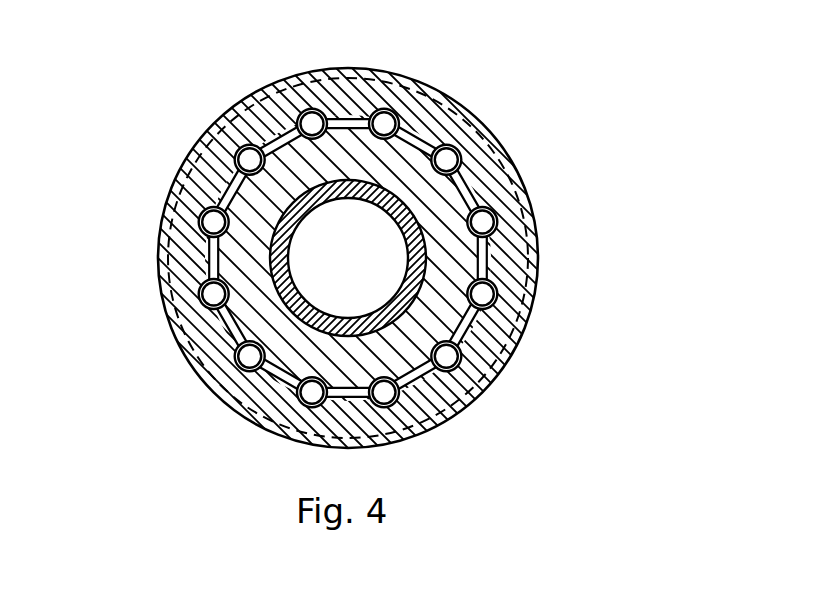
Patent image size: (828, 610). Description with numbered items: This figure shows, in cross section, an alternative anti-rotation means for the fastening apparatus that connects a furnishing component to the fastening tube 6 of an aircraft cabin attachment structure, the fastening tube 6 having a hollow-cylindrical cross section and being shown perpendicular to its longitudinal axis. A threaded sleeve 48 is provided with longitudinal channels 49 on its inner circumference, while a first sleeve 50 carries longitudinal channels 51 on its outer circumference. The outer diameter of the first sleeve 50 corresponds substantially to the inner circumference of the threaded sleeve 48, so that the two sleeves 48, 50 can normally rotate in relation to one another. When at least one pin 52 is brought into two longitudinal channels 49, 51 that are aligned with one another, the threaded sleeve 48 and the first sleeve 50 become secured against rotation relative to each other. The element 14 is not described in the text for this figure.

The cable assembly outer sheath 14 is at (530, 235).
The threaded sleeve 48 is at (482, 353).
The longitudinal channels 49 is at (387, 100).
The first sleeve 50 is at (193, 363).
The longitudinal channels 51 is at (203, 302).
The pin 52 is at (241, 158).
The fastening tube 6 is at (438, 168).